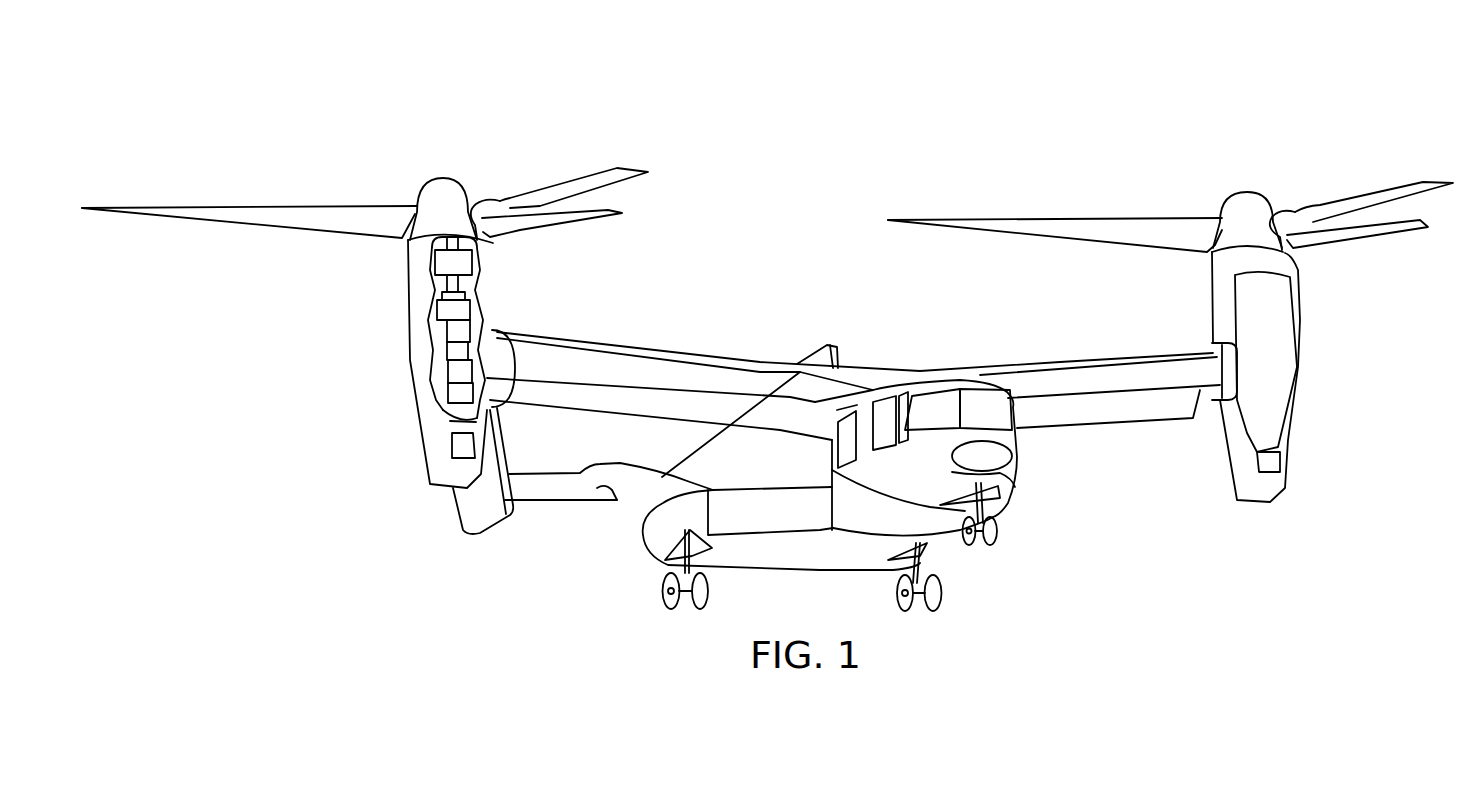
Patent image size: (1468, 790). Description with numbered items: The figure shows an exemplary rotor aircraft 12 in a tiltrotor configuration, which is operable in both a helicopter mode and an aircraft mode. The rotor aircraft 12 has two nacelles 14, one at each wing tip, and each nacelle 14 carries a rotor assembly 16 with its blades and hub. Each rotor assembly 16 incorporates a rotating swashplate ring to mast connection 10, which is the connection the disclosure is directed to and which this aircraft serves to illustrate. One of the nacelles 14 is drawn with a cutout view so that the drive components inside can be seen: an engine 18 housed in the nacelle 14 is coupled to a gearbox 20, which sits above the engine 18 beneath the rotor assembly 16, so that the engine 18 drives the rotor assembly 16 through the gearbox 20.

The rotating swashplate ring to mast connection 10 is at (445, 279).
The rotor aircraft 12 is at (863, 148).
The nacelle 14 is at (413, 392).
The rotor assembly 16 is at (440, 178).
The engine 18 is at (447, 353).
The gearbox 20 is at (473, 268).